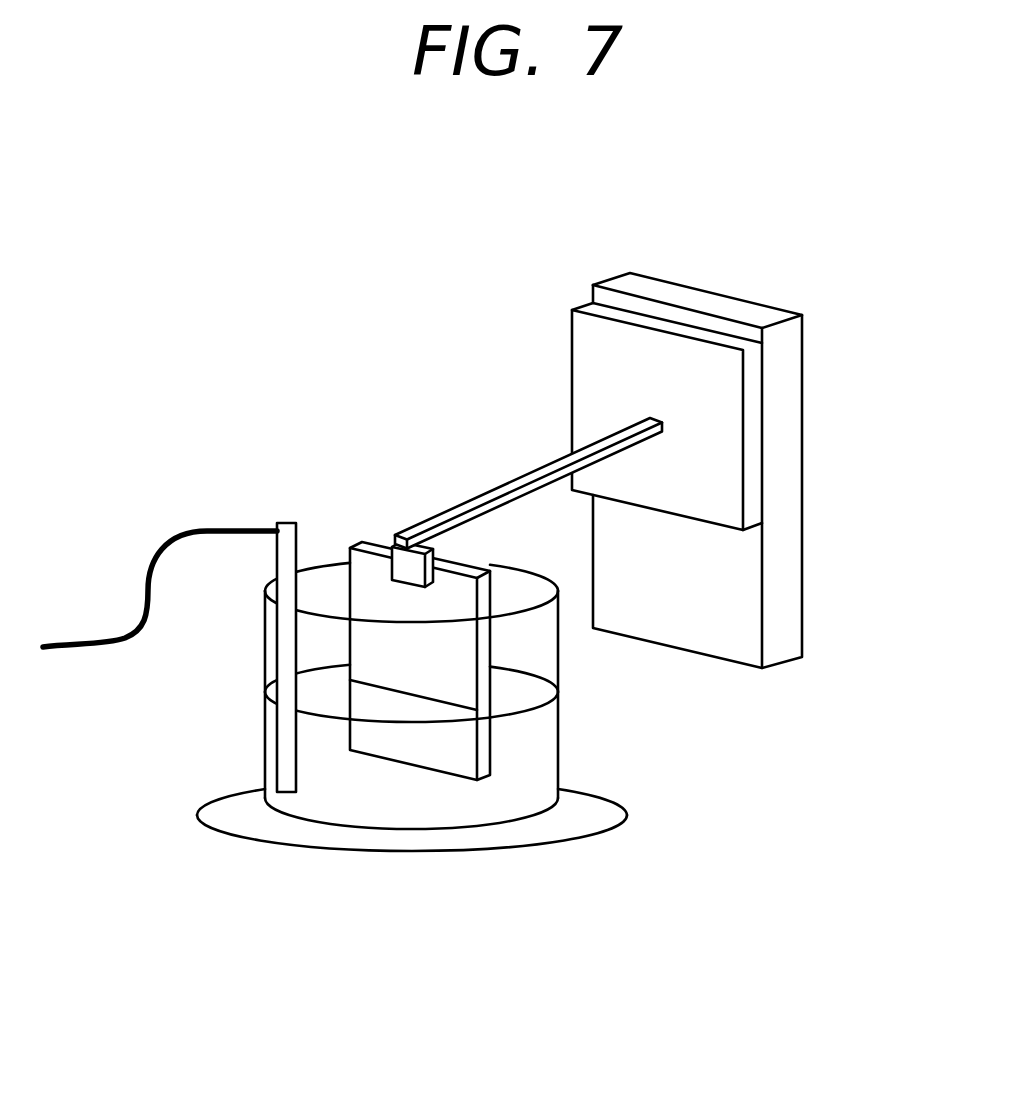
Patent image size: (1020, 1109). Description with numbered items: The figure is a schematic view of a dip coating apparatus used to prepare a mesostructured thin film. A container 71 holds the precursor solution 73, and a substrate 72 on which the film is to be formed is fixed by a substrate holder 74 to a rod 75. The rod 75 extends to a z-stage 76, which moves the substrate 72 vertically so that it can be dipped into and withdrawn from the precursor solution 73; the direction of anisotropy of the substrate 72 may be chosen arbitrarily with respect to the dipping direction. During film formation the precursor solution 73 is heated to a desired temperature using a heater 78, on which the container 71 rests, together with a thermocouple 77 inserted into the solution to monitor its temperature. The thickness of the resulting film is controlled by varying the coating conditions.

The container 71 is at (560, 677).
The substrate 72 is at (377, 545).
The precursor solution 73 is at (540, 797).
The substrate holder 74 is at (560, 615).
The rod 75 is at (552, 465).
The z-stage 76 is at (713, 422).
The thermocouple 77 is at (288, 523).
The heater 78 is at (340, 837).